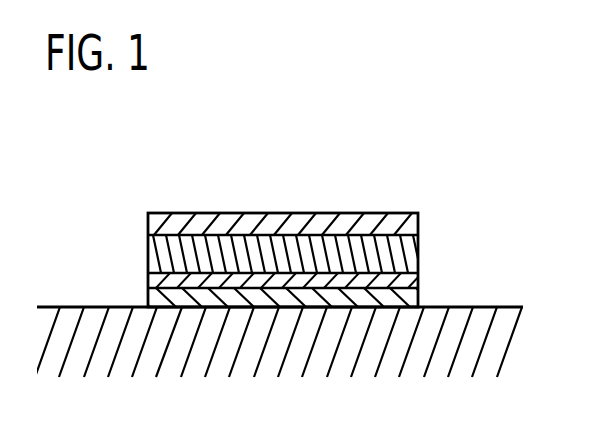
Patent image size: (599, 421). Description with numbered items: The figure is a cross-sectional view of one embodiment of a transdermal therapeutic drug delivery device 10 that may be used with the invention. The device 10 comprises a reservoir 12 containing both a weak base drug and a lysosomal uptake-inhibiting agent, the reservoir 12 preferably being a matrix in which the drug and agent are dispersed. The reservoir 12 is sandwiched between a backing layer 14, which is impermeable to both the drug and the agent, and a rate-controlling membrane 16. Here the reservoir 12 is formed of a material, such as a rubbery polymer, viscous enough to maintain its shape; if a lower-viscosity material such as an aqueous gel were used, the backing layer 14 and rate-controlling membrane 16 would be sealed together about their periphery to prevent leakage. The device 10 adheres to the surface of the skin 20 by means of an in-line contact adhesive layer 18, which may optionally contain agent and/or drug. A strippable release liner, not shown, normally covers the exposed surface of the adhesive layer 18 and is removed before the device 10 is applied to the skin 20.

The transdermal delivery device 10 is at (318, 207).
The reservoir 12 is at (410, 244).
The backing layer 14 is at (375, 215).
The rate-controlling membrane 16 is at (420, 275).
The adhesive layer 18 is at (420, 290).
The skin 20 is at (92, 307).